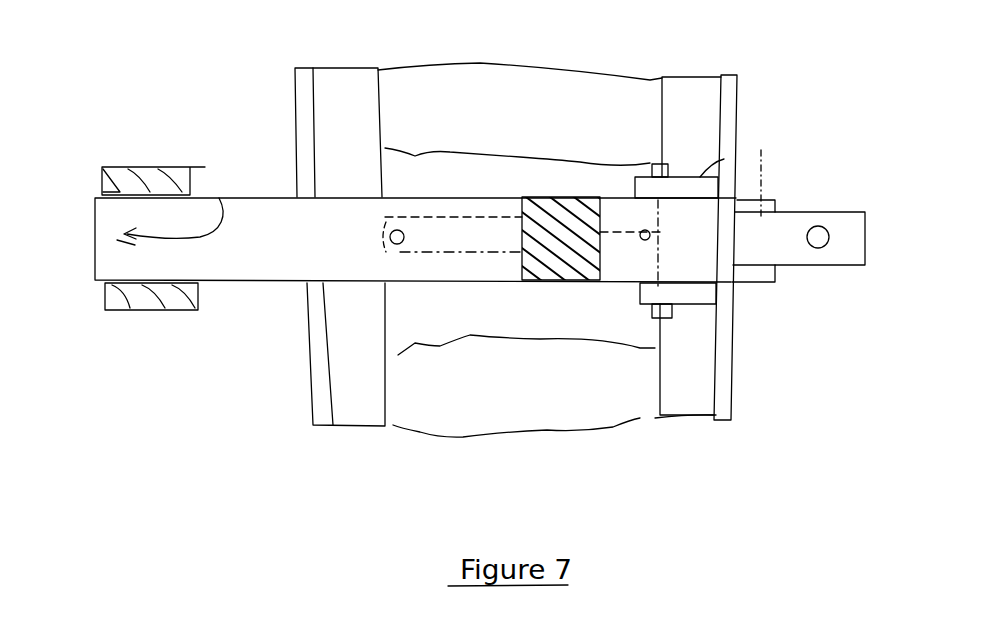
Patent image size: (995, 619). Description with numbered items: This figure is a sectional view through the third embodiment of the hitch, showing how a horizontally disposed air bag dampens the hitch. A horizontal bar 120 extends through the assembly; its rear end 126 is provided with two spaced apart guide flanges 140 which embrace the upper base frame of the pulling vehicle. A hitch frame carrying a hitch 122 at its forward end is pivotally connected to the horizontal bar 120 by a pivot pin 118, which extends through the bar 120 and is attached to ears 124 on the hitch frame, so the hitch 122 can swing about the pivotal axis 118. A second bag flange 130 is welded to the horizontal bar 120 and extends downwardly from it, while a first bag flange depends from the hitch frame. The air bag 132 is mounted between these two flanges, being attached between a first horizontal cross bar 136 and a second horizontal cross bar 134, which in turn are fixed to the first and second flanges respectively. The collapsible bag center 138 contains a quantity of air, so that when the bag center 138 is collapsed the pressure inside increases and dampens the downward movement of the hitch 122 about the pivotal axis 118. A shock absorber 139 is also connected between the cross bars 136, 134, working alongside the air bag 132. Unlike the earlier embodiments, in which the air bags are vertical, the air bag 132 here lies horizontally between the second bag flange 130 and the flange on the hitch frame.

The pivot pin 118 is at (655, 164).
The horizontal bar 120 is at (292, 259).
The hitch 122 is at (863, 250).
The ears 124 is at (720, 160).
The rear end 126 is at (218, 197).
The second bag flange 130 is at (296, 117).
The air bag 132 is at (390, 72).
The second horizontal cross bar 134 is at (340, 83).
The first horizontal cross bar 136 is at (693, 95).
The collapsible bag center 138 is at (507, 72).
The shock absorber 139 is at (475, 202).
The guide flanges 140 is at (183, 138).